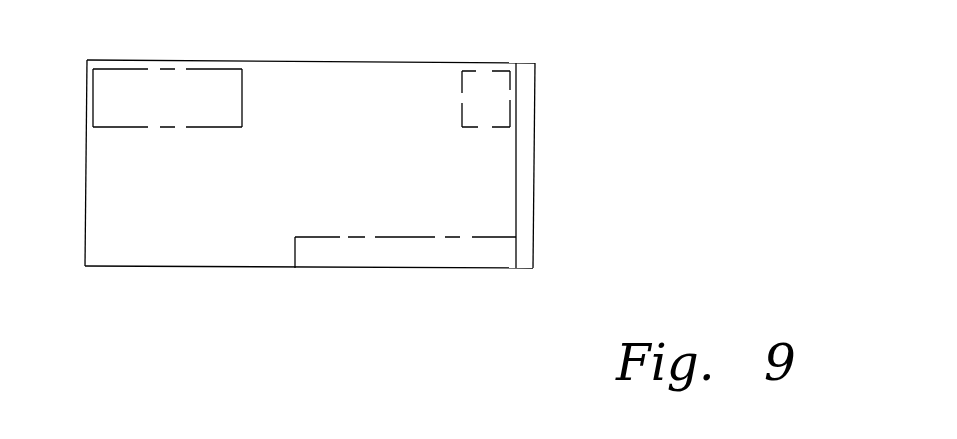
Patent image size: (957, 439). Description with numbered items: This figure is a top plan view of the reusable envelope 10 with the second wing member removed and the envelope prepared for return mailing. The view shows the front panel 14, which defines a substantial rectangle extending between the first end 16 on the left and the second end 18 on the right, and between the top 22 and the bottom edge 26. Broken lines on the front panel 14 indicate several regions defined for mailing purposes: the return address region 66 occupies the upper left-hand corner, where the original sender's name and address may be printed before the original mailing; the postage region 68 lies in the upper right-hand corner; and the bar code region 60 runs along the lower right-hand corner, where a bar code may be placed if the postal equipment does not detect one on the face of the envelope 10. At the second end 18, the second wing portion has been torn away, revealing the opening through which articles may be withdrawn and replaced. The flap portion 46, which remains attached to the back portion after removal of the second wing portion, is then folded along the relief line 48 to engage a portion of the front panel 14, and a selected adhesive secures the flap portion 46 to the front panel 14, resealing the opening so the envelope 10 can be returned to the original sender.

The reusable envelope 10 is at (372, 167).
The front panel 14 is at (336, 167).
The first end 16 is at (86, 152).
The second end 18 is at (581, 165).
The top 22 is at (320, 62).
The bottom edge 26 is at (235, 267).
The flap portion 46 is at (524, 162).
The relief line 48 is at (533, 243).
The bar code region 60 is at (405, 263).
The return address region 66 is at (186, 111).
The postage region 68 is at (500, 113).